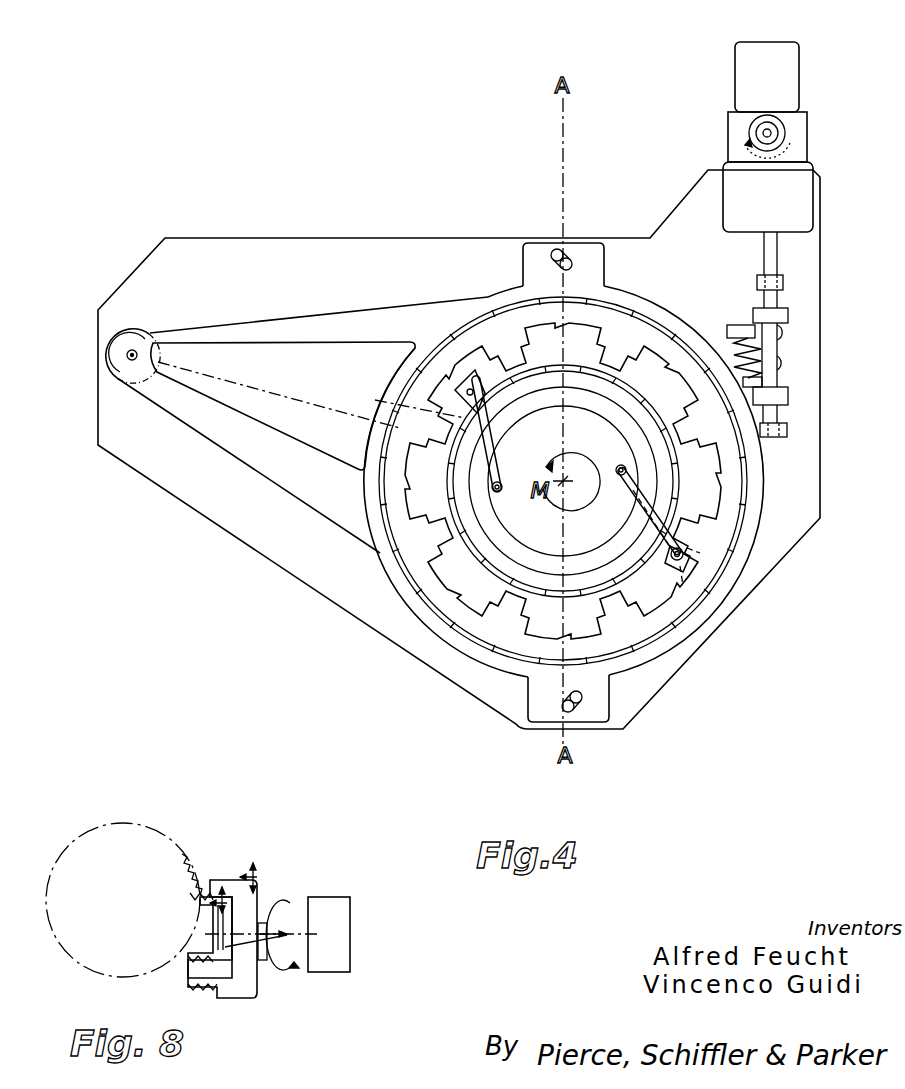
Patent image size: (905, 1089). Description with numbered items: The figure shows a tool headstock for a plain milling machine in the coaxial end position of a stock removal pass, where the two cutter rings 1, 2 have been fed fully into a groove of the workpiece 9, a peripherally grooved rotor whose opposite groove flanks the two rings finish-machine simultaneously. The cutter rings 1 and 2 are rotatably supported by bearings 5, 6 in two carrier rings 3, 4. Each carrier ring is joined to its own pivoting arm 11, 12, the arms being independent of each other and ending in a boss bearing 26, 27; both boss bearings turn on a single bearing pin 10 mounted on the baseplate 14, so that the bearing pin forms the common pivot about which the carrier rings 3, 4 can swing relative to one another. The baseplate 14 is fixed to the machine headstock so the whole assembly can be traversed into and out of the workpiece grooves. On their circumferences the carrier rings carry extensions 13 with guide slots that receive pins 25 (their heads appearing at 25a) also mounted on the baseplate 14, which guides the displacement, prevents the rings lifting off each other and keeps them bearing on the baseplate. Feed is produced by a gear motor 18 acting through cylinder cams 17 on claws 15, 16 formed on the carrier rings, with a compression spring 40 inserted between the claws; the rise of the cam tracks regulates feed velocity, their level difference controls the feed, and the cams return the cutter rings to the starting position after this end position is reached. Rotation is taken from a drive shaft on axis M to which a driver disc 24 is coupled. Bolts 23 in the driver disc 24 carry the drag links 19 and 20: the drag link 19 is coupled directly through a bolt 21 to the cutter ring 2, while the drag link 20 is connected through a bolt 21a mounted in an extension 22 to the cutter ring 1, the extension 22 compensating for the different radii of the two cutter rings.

In FIG. 4, the cutter ring 1 is at (412, 533).
In FIG. 8, the cutter ring 1 is at (253, 907).
In FIG. 4, the cutter ring 2 is at (457, 535).
In FIG. 8, the cutter ring 2 is at (205, 900).
In FIG. 4, the carrier ring 3 is at (437, 620).
In FIG. 4, the carrier ring 4 is at (493, 645).
In FIG. 4, the bearing 5 is at (537, 577).
In FIG. 4, the bearing 6 is at (557, 630).
In FIG. 8, the workpiece 9 is at (158, 855).
In FIG. 4, the bearing pin 10 is at (132, 350).
In FIG. 4, the pivoting arm 11 is at (265, 458).
In FIG. 4, the pivoting arm 12 is at (235, 388).
In FIG. 4, the extension 13 is at (597, 248).
In FIG. 4, the baseplate 14 is at (187, 273).
In FIG. 4, the claw 15 is at (748, 322).
In FIG. 4, the claw 16 is at (735, 330).
In FIG. 4, the cylinder cam 17 is at (756, 323).
In FIG. 4, the gear motor 18 is at (742, 198).
In FIG. 8, the gear motor 18 is at (330, 960).
In FIG. 4, the drag link 19 is at (474, 378).
In FIG. 4, the drag link 20 is at (690, 560).
In FIG. 4, the bolt 21 is at (497, 486).
In FIG. 4, the bolt 21a is at (637, 483).
In FIG. 4, the extension 22 is at (632, 488).
In FIG. 4, the bolt 23 is at (478, 392).
In FIG. 4, the driver disc 24 is at (597, 533).
In FIG. 4, the pin 25 is at (557, 252).
In FIG. 4, the pin head 25a is at (565, 262).
In FIG. 4, the boss bearing 26 is at (152, 336).
In FIG. 4, the boss bearing 27 is at (116, 380).
In FIG. 4, the compression spring 40 is at (772, 349).